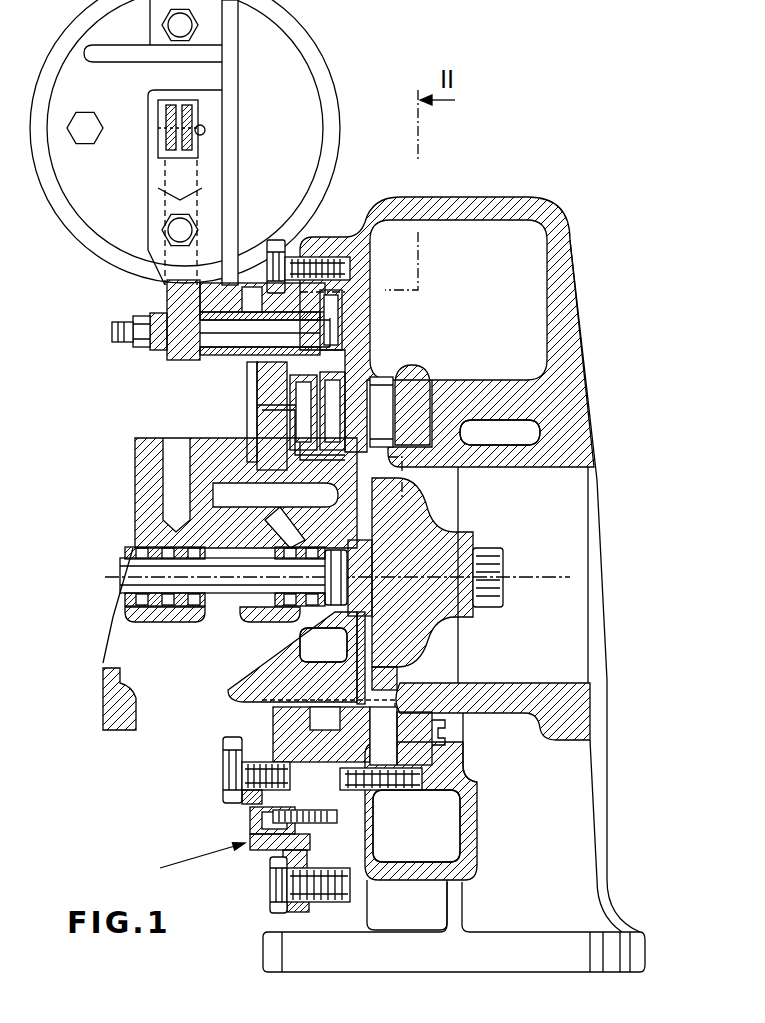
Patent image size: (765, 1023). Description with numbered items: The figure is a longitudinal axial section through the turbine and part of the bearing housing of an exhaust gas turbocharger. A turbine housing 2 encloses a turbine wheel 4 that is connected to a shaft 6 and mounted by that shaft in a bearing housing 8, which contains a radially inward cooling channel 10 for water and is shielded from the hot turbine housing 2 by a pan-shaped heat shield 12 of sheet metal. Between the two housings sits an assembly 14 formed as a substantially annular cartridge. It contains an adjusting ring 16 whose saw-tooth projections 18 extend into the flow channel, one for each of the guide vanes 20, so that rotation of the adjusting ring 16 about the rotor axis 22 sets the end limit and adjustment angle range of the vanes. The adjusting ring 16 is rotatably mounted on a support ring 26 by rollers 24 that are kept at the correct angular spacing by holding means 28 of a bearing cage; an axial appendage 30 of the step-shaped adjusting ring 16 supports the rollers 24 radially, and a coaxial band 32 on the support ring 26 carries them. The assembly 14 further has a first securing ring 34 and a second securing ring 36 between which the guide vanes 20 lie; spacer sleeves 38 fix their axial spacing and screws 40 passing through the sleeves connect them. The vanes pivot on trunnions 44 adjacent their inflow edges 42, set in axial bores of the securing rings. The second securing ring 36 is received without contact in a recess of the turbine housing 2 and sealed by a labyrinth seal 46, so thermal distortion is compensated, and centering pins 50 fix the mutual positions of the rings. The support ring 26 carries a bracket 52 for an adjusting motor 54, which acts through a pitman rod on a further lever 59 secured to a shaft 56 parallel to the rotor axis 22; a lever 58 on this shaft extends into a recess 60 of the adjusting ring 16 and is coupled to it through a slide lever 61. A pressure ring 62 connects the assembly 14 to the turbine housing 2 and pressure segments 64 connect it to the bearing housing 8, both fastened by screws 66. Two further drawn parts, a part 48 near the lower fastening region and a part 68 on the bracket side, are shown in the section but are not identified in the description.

The turbine housing 2 is at (578, 460).
The turbine wheel 4 is at (456, 550).
The shaft 6 is at (135, 582).
The bearing housing 8 is at (112, 706).
The cooling channel 10 is at (312, 655).
The heat shield 12 is at (320, 693).
The assembly 14 is at (195, 860).
The adjusting ring 16 is at (375, 706).
The projections 18 is at (392, 712).
The guide vanes 20 is at (405, 748).
The rotor axis 22 is at (112, 580).
The rollers 24 is at (300, 422).
The support ring 26 is at (262, 392).
The holding means 28 is at (250, 378).
The axial appendage 30 is at (272, 806).
The coaxial band 32 is at (270, 450).
The first securing ring 34 is at (416, 826).
The second securing ring 36 is at (430, 756).
The spacer sleeves 38 is at (378, 790).
The screws 40 is at (435, 778).
The inflow edges 42 is at (395, 372).
The trunnions 44 is at (410, 388).
The labyrinth seal 46 is at (452, 423).
The plate 48 is at (272, 840).
The centering pins 50 is at (300, 862).
The bracket 52 is at (236, 42).
The adjusting motor 54 is at (278, 82).
The shaft 56 is at (270, 258).
The lever 58 is at (340, 300).
The further lever 59 is at (178, 304).
The recess 60 is at (330, 360).
The slide lever 61 is at (350, 368).
The pressure ring 62 is at (298, 915).
The pressure segments 64 is at (225, 755).
The screws 66 is at (242, 788).
The bracket 68 is at (178, 132).